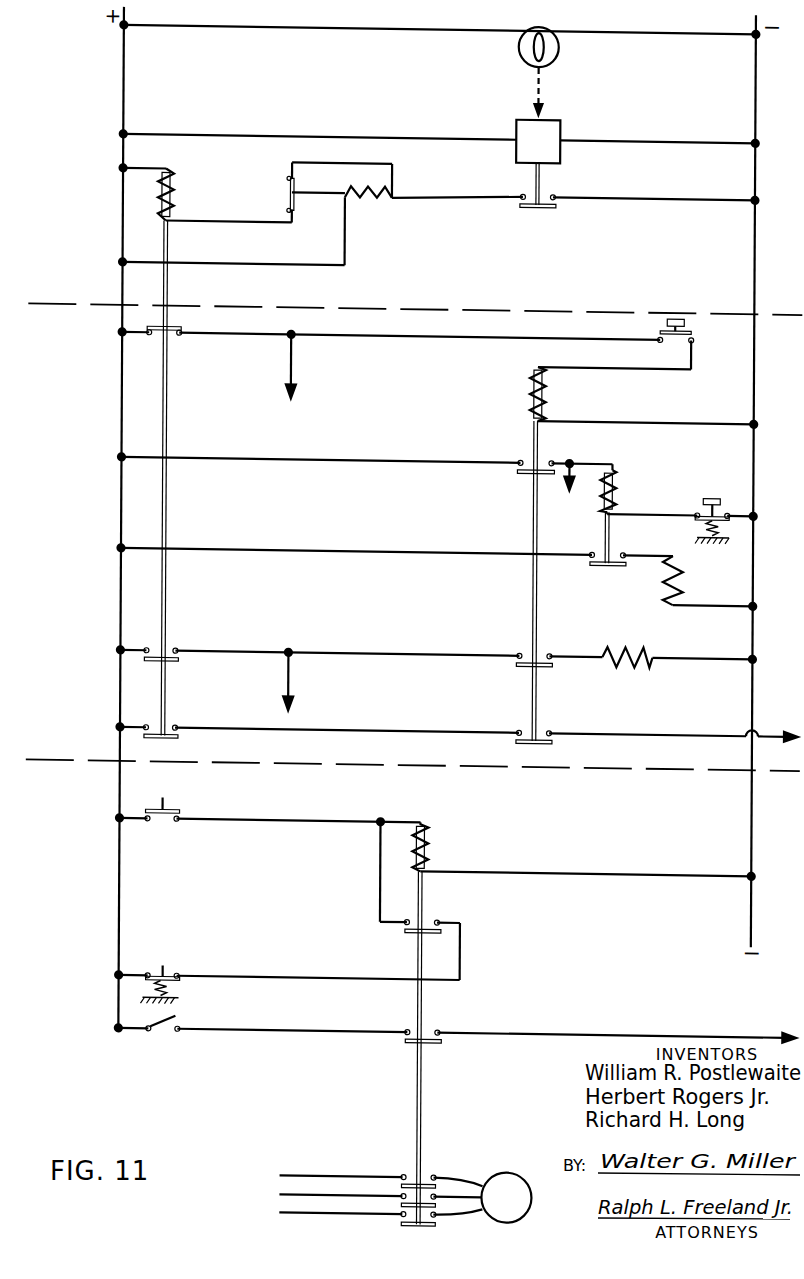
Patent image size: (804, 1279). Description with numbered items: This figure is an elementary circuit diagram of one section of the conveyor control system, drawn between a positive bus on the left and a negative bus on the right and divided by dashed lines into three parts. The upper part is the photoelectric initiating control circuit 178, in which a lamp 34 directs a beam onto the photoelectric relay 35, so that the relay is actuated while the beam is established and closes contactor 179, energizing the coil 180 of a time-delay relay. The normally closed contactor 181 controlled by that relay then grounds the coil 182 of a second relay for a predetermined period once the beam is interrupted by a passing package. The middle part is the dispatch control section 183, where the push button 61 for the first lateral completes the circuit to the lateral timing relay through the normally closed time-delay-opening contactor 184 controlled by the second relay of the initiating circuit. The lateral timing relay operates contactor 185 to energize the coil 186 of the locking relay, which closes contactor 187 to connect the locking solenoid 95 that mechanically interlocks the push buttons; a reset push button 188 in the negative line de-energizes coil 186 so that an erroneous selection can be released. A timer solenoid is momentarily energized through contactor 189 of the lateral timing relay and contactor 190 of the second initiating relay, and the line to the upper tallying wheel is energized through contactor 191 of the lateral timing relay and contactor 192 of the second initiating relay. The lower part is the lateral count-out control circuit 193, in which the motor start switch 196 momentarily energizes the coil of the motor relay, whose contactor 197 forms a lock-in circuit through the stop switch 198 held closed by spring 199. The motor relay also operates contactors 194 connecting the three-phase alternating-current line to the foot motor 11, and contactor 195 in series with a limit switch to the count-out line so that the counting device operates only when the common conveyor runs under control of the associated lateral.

The photoelectric initiating control circuit 178 is at (56, 73).
The lamp 34 is at (553, 49).
The photoelectric relay 35 is at (561, 118).
The contactor 179 is at (548, 189).
The coil of relay STR-1 180 is at (350, 200).
The contactor 181 is at (290, 182).
The coil of relay STR-2 182 is at (176, 195).
The dispatch control section 183 is at (51, 446).
The contactor 184 is at (168, 334).
The push button 61 is at (664, 318).
The contactor 185 is at (541, 462).
The coil of relay SLR 186 is at (616, 483).
The contactor 187 is at (611, 553).
The reset push button 188 is at (724, 494).
The locking solenoid 95 is at (745, 565).
The contactor 189 is at (541, 656).
The contactor 190 is at (169, 655).
The contactor 191 is at (541, 733).
The contactor 192 is at (169, 732).
The lateral count-out control circuit 193 is at (40, 833).
The motor start switch 196 is at (176, 806).
The contactor 197 is at (427, 924).
The stop switch 198 is at (167, 965).
The spring 199 is at (172, 984).
The contactor 195 is at (426, 1033).
The contactors 194 is at (424, 1180).
The foot motor 11 is at (533, 1205).